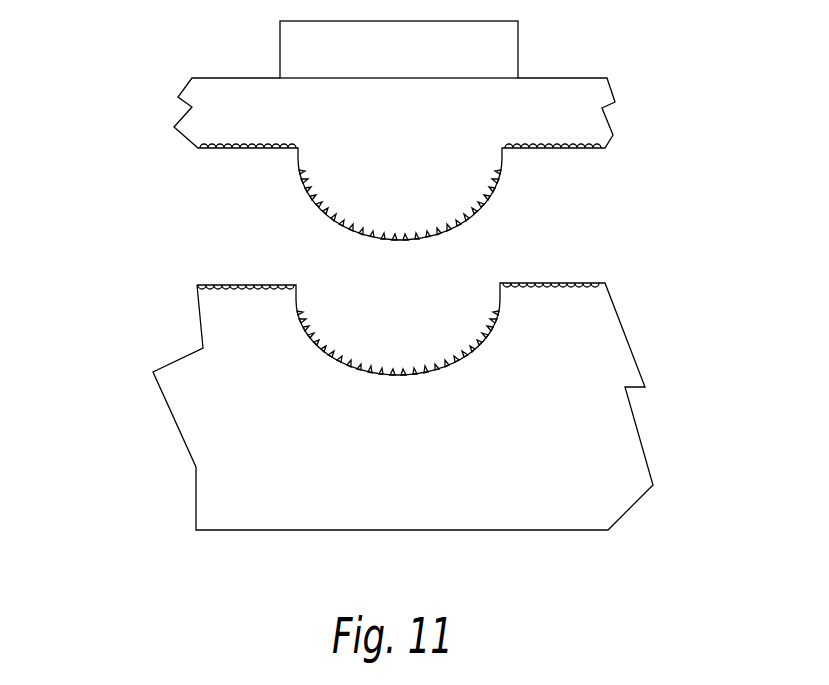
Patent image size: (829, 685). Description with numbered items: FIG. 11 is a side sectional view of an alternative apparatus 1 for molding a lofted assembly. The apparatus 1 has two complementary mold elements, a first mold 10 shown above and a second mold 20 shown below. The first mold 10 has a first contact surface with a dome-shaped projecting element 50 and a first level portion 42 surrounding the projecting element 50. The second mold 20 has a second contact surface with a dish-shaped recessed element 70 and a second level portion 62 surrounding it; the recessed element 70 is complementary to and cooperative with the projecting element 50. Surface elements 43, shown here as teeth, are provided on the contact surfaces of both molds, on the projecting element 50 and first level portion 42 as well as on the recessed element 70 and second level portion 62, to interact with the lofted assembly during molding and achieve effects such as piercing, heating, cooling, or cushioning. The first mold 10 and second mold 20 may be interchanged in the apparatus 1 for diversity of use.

The apparatus 1 is at (128, 81).
The first mold 10 is at (547, 97).
The second mold 20 is at (582, 433).
The first level portion 42 is at (235, 152).
The surface elements 43 is at (350, 363).
The projecting element 50 is at (343, 177).
The second level portion 62 is at (223, 285).
The recessed element 70 is at (497, 327).